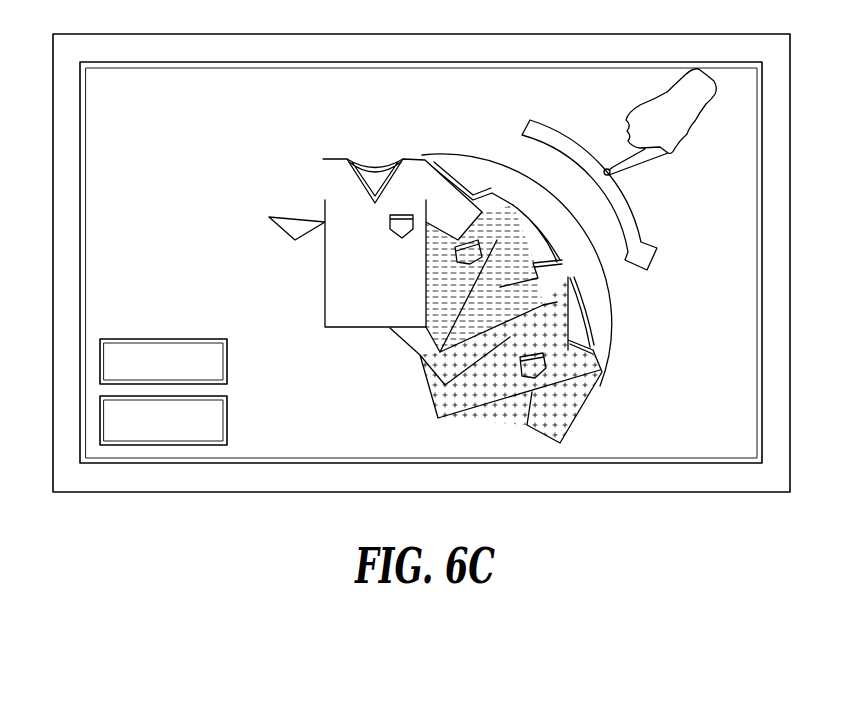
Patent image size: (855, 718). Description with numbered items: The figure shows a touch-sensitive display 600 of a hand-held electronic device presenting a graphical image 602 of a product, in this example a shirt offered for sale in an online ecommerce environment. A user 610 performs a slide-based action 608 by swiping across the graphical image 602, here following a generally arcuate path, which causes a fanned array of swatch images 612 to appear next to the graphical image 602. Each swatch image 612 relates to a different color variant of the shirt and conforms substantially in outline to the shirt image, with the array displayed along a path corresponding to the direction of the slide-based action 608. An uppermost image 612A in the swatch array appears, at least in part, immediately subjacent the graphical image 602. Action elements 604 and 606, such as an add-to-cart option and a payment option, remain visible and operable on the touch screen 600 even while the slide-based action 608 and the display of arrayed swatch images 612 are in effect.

The touch-sensitive display 600 is at (421, 34).
The graphical image of a product 602 is at (325, 264).
The action element 604 is at (228, 362).
The action element 606 is at (228, 420).
The slide-based action 608 is at (632, 209).
The user 610 is at (693, 122).
The swatch images 612 is at (577, 226).
The uppermost image 612A is at (420, 354).